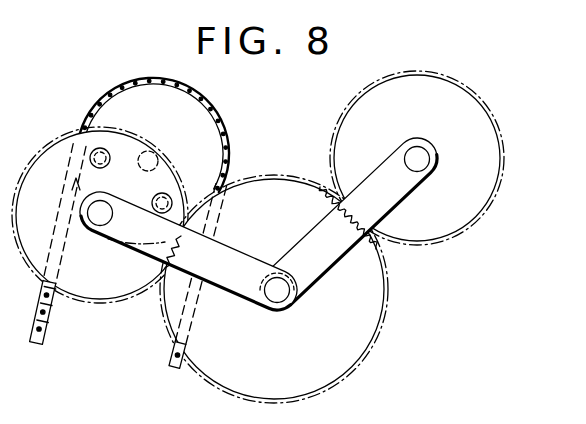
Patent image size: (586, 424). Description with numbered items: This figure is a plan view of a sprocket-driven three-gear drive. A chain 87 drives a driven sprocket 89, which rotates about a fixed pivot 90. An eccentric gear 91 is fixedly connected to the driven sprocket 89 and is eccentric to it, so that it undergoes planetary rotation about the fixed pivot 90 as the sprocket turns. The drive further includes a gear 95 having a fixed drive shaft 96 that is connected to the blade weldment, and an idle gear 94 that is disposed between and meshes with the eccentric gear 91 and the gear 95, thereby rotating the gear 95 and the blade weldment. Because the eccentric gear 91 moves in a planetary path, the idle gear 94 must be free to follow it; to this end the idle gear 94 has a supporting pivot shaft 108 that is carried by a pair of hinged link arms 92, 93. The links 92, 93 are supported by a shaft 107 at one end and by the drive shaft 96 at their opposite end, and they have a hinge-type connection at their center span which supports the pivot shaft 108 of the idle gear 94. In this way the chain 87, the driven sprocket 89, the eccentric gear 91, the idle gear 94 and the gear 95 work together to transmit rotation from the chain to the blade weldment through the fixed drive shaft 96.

The chain 87 is at (45, 318).
The driven sprocket 89 is at (185, 108).
The fixed pivot 90 is at (156, 155).
The eccentric gear 91 is at (48, 150).
The hinged link arm 92 is at (233, 263).
The hinged link arm 93 is at (320, 234).
The idle gear 94 is at (353, 347).
The gear 95 is at (502, 176).
The fixed drive shaft 96 is at (418, 160).
The shaft 107 is at (106, 212).
The supporting pivot shaft 108 is at (279, 291).